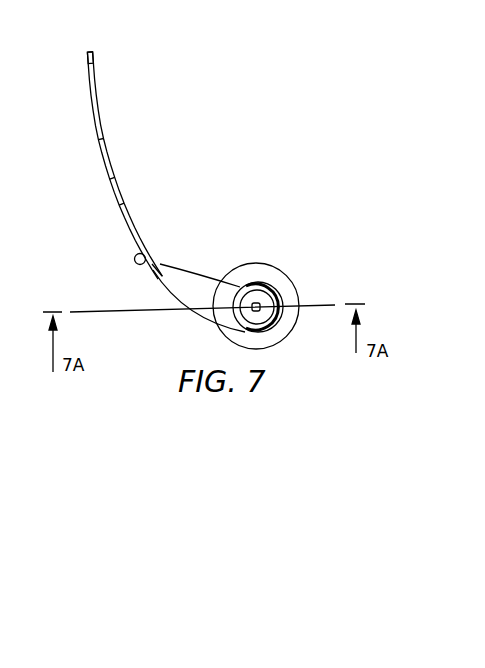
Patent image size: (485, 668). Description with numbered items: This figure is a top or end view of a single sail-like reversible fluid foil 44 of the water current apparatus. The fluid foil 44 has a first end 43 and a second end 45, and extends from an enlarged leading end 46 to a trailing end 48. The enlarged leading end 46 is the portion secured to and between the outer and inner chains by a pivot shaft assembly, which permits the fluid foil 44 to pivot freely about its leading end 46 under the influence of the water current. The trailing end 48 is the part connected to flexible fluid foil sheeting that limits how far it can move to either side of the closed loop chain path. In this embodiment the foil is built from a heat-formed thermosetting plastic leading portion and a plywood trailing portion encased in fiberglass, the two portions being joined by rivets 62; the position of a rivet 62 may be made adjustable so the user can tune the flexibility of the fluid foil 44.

The first end 43 is at (116, 171).
The fluid foil 44 is at (110, 144).
The second end 45 is at (112, 192).
The leading end 46 is at (263, 286).
The trailing end 48 is at (96, 53).
The rivet 62 is at (146, 252).